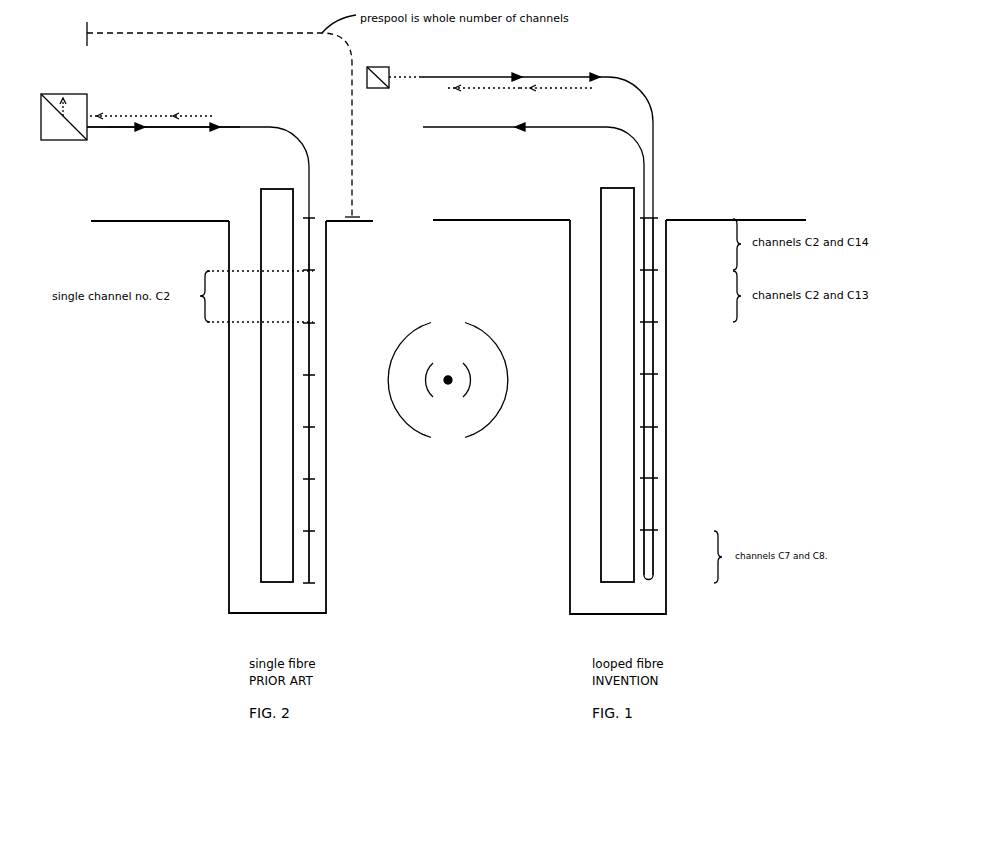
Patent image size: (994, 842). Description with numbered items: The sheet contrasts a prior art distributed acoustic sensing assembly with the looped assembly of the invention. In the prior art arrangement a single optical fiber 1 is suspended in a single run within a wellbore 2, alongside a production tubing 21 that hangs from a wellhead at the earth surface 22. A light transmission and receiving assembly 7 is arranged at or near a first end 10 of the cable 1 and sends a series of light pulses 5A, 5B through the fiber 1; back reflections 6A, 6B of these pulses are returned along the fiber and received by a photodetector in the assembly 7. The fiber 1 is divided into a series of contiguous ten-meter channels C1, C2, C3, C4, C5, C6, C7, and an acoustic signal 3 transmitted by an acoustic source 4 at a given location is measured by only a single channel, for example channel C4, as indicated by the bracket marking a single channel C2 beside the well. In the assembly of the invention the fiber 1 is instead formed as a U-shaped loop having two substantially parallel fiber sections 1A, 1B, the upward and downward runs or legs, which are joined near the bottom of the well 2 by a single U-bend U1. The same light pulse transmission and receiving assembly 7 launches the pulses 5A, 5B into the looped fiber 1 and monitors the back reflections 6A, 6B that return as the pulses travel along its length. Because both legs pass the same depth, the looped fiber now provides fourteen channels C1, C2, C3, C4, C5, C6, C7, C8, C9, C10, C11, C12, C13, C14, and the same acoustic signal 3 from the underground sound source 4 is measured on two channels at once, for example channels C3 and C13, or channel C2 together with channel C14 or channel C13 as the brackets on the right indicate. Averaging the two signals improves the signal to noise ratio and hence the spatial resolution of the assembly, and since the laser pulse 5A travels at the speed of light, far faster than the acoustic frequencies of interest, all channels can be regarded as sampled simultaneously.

In FIG. 2, the optical fiber 1 is at (282, 128).
In FIG. 1, the optical fiber 1 is at (557, 328).
In FIG. 1, the first fiber section 1A is at (433, 77).
In FIG. 1, the second fiber section 1B is at (430, 127).
In FIG. 2, the wellbore 2 is at (241, 222).
In FIG. 1, the wellbore 2 is at (586, 222).
In FIG. 1, the acoustic signal 3 is at (415, 329).
In FIG. 1, the acoustic source 4 is at (448, 378).
In FIG. 2, the light pulse 5A is at (200, 130).
In FIG. 2, the light pulse 5B is at (126, 130).
In FIG. 1, the light pulse 5B is at (522, 77).
In FIG. 2, the back reflection 6A is at (115, 113).
In FIG. 1, the back reflection 6A is at (472, 88).
In FIG. 2, the back reflection 6B is at (160, 113).
In FIG. 1, the back reflection 6B is at (545, 88).
In FIG. 2, the light transmission and receiving assembly 7 is at (40, 128).
In FIG. 1, the light transmission and receiving assembly 7 is at (373, 89).
In FIG. 2, the first end of the cable 10 is at (96, 130).
In FIG. 2, the production tubing 21 is at (272, 189).
In FIG. 1, the production tubing 21 is at (612, 188).
In FIG. 2, the earth surface 22 is at (156, 219).
In FIG. 1, the earth surface 22 is at (498, 219).
In FIG. 2, the channel C1 is at (309, 246).
In FIG. 1, the channel C1 is at (644, 243).
In FIG. 2, the channel C2 is at (309, 298).
In FIG. 1, the channel C2 is at (644, 296).
In FIG. 2, the channel C3 is at (309, 350).
In FIG. 1, the channel C3 is at (644, 347).
In FIG. 2, the channel C4 is at (309, 402).
In FIG. 1, the channel C4 is at (644, 399).
In FIG. 2, the channel C5 is at (309, 454).
In FIG. 1, the channel C5 is at (644, 451).
In FIG. 2, the channel C6 is at (309, 506).
In FIG. 1, the channel C6 is at (644, 503).
In FIG. 2, the channel C7 is at (309, 558).
In FIG. 1, the channel C7 is at (644, 556).
In FIG. 1, the channel C8 is at (653, 556).
In FIG. 1, the channel C9 is at (653, 504).
In FIG. 1, the channel C10 is at (653, 453).
In FIG. 1, the channel C11 is at (653, 400).
In FIG. 1, the channel C12 is at (653, 349).
In FIG. 1, the channel C13 is at (653, 296).
In FIG. 1, the channel C14 is at (653, 248).
In FIG. 1, the U-bend U1 is at (650, 582).